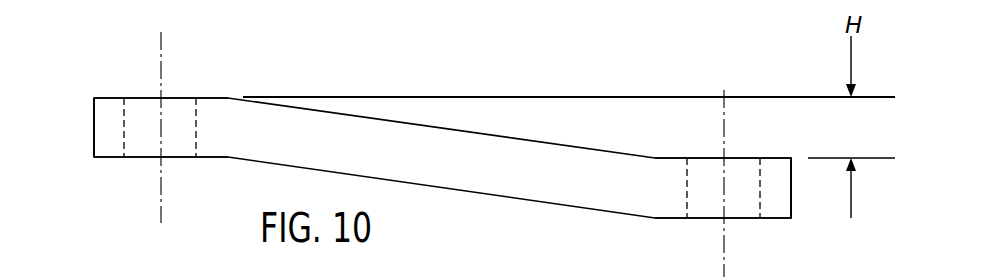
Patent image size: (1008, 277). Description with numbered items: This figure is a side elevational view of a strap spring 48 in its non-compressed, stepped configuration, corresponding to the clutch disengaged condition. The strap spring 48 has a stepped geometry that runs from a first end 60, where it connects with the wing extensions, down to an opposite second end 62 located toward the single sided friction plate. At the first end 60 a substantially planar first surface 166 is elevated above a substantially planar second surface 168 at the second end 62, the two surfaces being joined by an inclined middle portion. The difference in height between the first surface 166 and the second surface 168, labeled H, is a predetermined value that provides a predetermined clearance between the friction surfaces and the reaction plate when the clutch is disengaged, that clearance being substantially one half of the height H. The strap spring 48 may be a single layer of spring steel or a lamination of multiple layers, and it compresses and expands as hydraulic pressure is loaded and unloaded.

The strap spring 48 is at (613, 72).
The first end 60 is at (108, 97).
The second end 62 is at (773, 158).
The first surface 166 is at (92, 90).
The second surface 168 is at (788, 146).